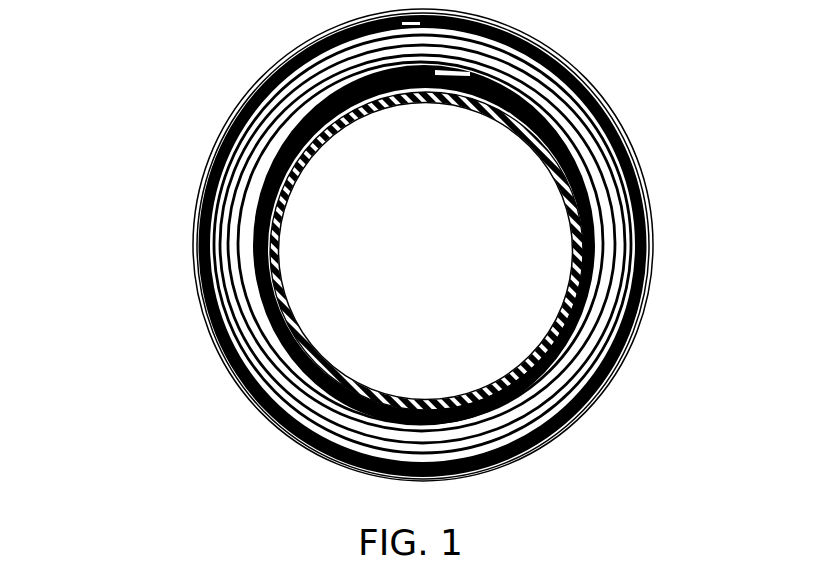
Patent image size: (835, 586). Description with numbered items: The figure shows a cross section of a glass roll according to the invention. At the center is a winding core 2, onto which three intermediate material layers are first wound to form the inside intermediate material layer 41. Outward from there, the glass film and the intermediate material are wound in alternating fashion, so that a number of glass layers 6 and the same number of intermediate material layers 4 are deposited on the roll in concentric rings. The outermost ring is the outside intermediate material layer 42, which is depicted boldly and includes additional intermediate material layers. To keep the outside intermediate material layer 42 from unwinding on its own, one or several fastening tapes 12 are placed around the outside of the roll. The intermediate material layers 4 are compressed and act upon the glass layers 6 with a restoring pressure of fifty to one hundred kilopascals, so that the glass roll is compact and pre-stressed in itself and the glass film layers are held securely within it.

The winding core 2 is at (298, 170).
The intermediate material layers 4 is at (233, 268).
The inside intermediate material layer 41 is at (257, 242).
The outside intermediate material layer 42 is at (232, 372).
The glass layers 6 is at (585, 80).
The fastening tapes 12 is at (652, 275).